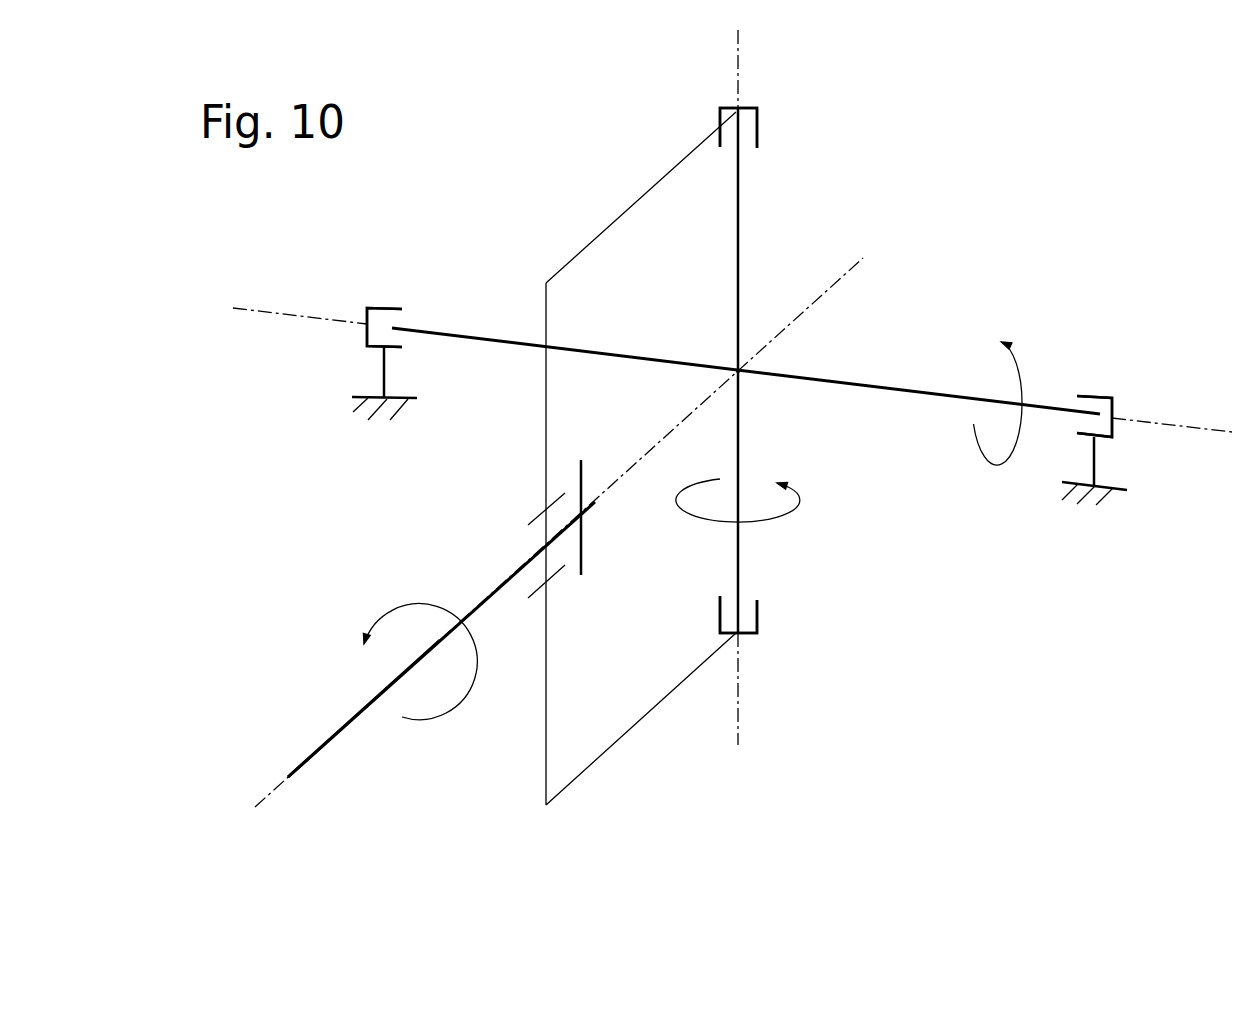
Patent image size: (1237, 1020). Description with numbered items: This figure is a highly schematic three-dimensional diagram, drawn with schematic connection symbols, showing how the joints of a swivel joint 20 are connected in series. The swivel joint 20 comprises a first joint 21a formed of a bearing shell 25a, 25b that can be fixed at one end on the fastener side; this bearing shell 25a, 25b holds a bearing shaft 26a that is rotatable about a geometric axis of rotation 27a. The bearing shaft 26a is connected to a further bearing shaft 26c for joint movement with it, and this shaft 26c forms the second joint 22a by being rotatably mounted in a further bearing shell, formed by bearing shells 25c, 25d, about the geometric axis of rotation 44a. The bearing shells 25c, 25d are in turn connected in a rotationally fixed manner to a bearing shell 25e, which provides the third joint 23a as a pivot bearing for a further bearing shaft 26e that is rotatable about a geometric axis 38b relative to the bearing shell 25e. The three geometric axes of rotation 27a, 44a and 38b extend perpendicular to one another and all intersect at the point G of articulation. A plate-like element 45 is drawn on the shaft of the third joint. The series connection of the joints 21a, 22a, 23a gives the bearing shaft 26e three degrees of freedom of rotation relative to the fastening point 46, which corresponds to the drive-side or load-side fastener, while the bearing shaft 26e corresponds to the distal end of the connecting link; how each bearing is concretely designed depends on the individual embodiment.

The swivel joint 20 is at (940, 245).
The first joint 21a is at (390, 293).
The second joint 22a is at (695, 100).
The third joint 23a is at (507, 538).
The bearing shell 25a is at (367, 335).
The bearing shell 25b is at (1095, 395).
The bearing shell 25c is at (760, 132).
The bearing shell 25d is at (758, 618).
The bearing shell 25e is at (532, 615).
The bearing shaft 26a is at (420, 328).
The further bearing shaft 26c is at (742, 225).
The further bearing shaft 26e is at (367, 705).
The geometric axis of rotation 27a is at (287, 312).
The geometric axis 38b is at (280, 785).
The geometric axis of rotation 44a is at (742, 56).
The rotor disk plate 45 is at (580, 477).
The fastening point 46 is at (375, 408).
The point of articulation G is at (741, 368).